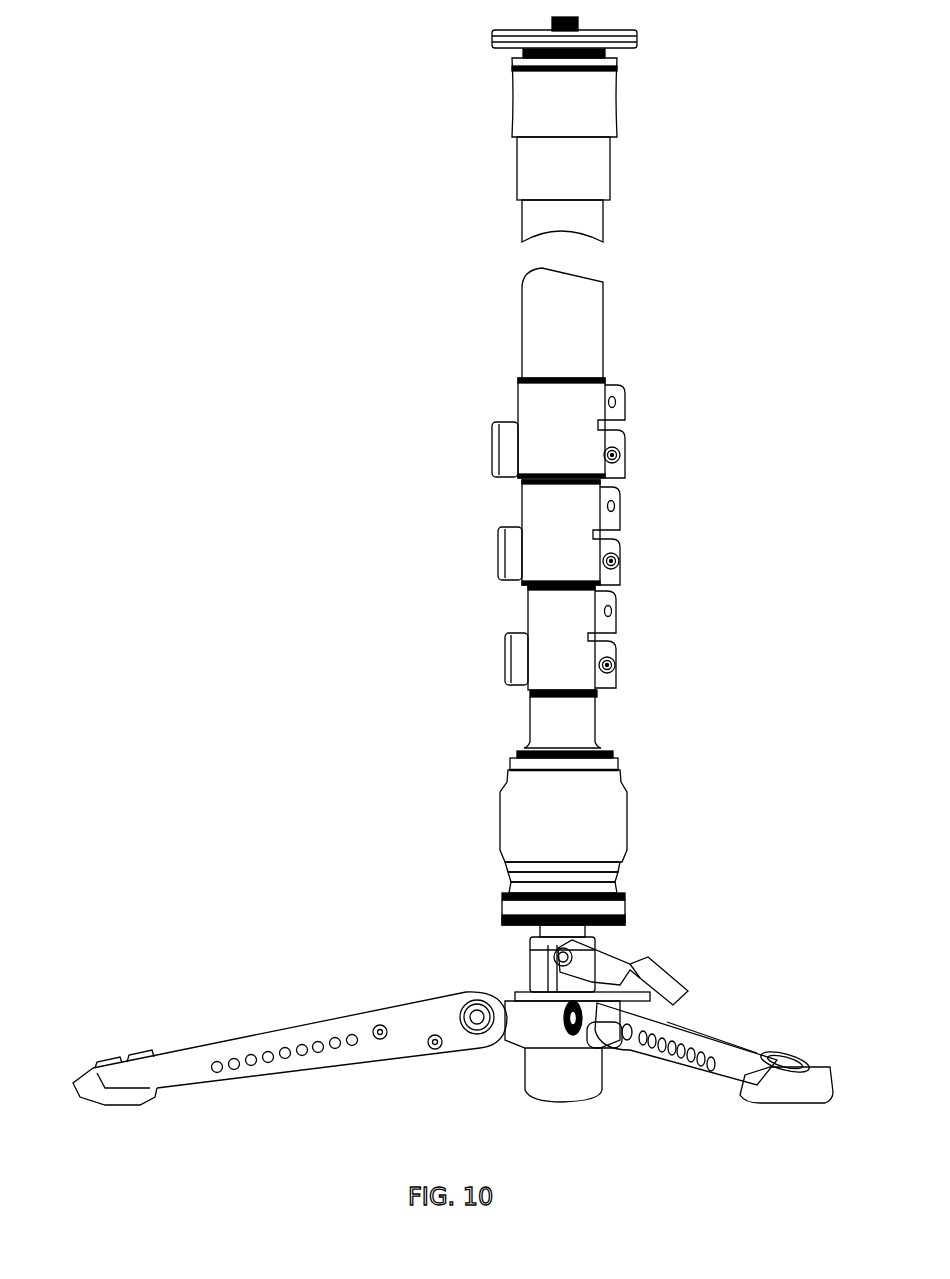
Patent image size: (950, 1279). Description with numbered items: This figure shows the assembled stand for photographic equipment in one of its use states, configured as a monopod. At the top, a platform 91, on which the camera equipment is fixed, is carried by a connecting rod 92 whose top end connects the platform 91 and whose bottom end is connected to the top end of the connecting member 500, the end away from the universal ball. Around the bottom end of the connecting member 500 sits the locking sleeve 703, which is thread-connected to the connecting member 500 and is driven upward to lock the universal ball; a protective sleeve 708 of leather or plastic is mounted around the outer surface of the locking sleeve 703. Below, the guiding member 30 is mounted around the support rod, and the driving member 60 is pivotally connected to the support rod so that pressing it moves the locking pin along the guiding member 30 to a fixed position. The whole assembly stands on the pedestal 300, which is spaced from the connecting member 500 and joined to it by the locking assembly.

The platform 91 is at (632, 32).
The connecting rod 92 is at (573, 355).
The connecting member 500 is at (570, 813).
The locking sleeve 703 is at (623, 886).
The protective sleeve 708 is at (597, 912).
The guiding member 30 is at (600, 952).
The driving member 60 is at (615, 970).
The pedestal 300 is at (672, 1042).